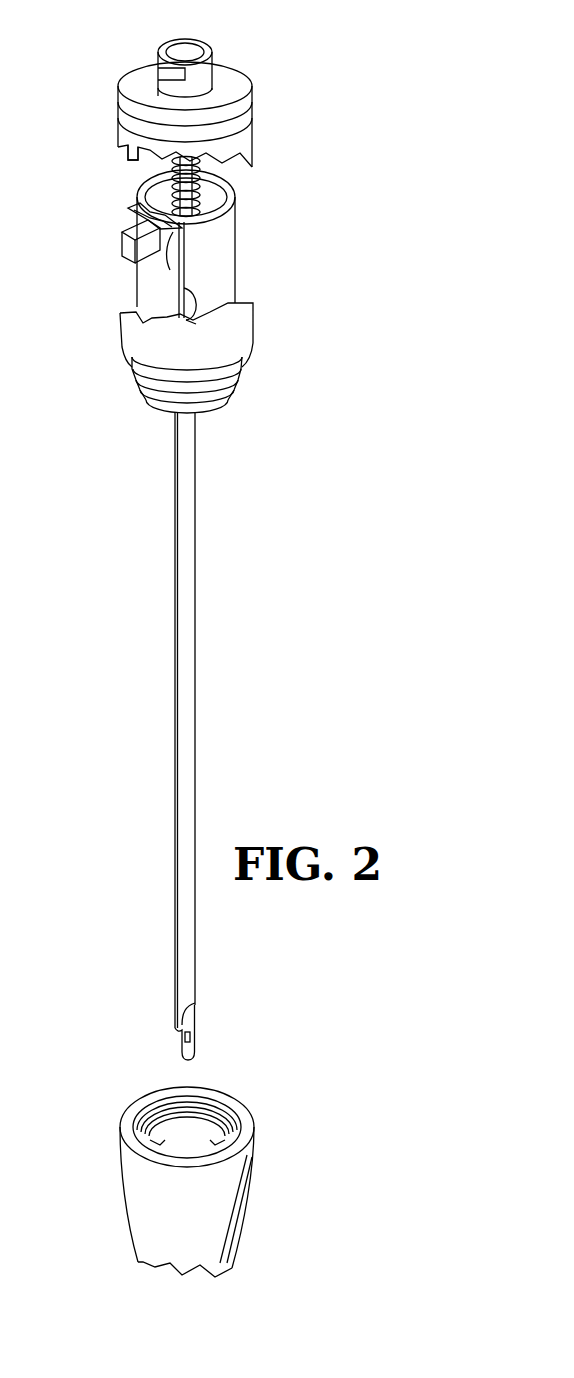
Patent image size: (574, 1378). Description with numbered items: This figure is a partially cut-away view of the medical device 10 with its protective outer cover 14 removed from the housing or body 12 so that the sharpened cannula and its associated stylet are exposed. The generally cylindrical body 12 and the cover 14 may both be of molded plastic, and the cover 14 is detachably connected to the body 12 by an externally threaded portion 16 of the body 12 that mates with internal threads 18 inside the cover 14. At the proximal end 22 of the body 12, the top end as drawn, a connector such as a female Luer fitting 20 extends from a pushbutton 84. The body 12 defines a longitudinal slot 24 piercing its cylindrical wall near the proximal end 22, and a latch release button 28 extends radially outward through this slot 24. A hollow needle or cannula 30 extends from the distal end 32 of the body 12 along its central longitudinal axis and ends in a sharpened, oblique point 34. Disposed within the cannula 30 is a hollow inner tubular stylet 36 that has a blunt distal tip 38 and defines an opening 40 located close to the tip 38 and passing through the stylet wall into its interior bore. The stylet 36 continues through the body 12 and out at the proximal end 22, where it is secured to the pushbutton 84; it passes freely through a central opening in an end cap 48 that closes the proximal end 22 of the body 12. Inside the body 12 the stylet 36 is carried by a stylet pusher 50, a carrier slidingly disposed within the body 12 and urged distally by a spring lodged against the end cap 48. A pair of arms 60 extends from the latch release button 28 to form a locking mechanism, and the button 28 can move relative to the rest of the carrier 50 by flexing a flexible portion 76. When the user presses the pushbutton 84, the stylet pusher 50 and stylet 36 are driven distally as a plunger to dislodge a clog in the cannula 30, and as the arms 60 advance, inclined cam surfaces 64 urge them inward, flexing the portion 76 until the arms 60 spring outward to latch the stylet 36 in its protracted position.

The medical device 10 is at (76, 99).
The body 12 is at (255, 320).
The protective outer cover 14 is at (256, 1176).
The externally threaded portion 16 is at (244, 380).
The internal threads 18 is at (225, 1122).
The female Luer fitting 20 is at (178, 39).
The proximal end 22 is at (254, 127).
The longitudinal slot 24 is at (128, 151).
The latch release button 28 is at (122, 264).
The cannula 30 is at (197, 700).
The distal end 32 is at (162, 410).
The sharpened oblique point 34 is at (180, 1036).
The tubular stylet 36 is at (196, 1018).
The distal tip 38 is at (180, 1064).
The opening 40 is at (192, 1040).
The end cap 48 is at (236, 152).
The stylet pusher 50 is at (237, 244).
The arms 60 is at (128, 209).
The inclined cam surfaces 64 is at (185, 272).
The flexible portion 76 is at (192, 324).
The pushbutton 84 is at (236, 57).